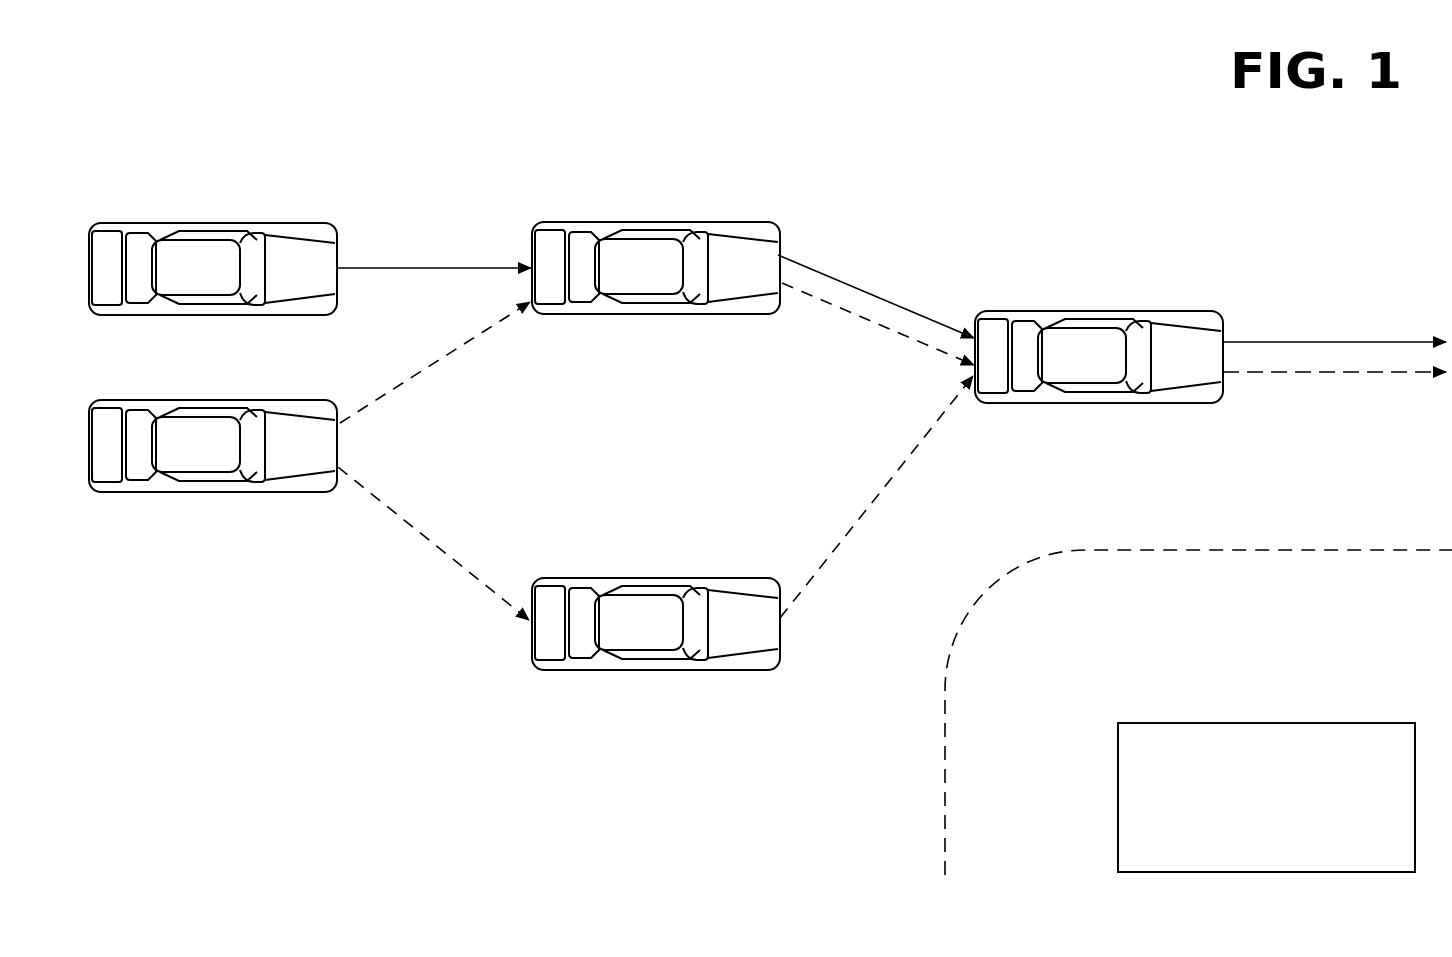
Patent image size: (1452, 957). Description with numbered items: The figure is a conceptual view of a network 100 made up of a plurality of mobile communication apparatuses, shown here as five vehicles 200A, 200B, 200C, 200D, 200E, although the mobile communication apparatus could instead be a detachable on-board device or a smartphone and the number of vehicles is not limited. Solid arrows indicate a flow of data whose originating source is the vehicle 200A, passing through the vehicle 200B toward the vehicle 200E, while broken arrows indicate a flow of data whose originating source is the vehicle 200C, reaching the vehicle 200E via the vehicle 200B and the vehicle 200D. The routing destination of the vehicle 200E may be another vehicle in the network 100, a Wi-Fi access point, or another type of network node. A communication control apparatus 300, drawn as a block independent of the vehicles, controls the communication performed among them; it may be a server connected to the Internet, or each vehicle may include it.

The network 100 is at (864, 131).
The vehicle 200A is at (178, 232).
The vehicle 200B is at (621, 232).
The vehicle 200C is at (178, 409).
The vehicle 200D is at (621, 587).
The vehicle 200E is at (1064, 320).
The communication control apparatus 300 is at (1237, 722).